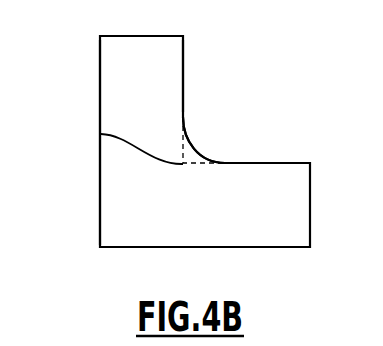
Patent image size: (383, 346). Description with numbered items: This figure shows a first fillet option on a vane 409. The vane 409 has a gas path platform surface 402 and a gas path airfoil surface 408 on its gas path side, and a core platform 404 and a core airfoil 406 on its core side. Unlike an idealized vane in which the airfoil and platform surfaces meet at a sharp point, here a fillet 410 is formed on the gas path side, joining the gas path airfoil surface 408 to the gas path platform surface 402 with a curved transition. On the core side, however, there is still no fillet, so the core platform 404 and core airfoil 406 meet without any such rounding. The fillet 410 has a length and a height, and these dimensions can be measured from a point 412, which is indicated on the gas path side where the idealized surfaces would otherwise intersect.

The gas path platform surface 402 is at (257, 163).
The core platform 404 is at (188, 248).
The core airfoil 406 is at (100, 178).
The gas path airfoil surface 408 is at (183, 68).
The vane 409 is at (285, 56).
The fillet 410 is at (198, 143).
The point 412 is at (101, 133).